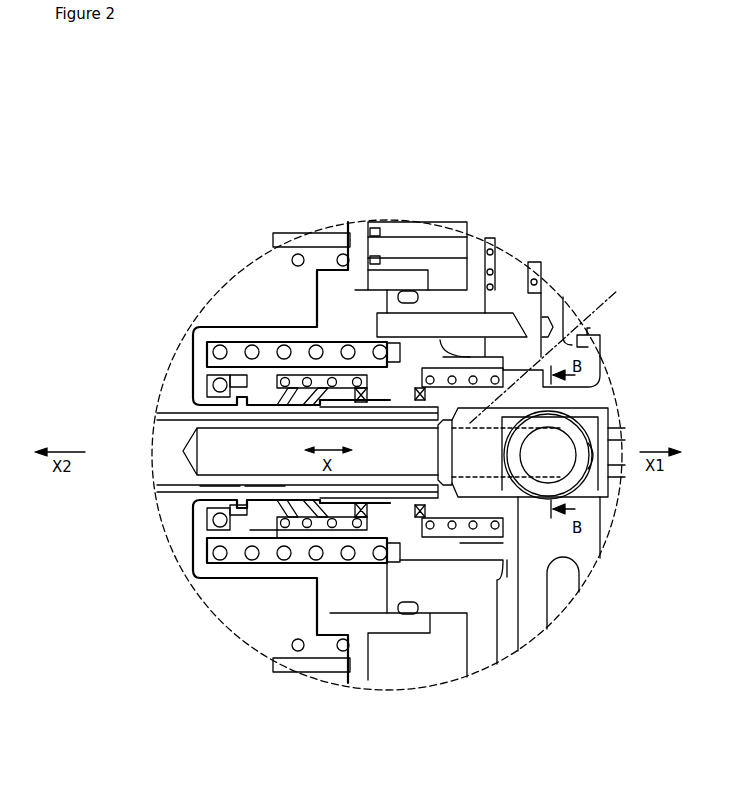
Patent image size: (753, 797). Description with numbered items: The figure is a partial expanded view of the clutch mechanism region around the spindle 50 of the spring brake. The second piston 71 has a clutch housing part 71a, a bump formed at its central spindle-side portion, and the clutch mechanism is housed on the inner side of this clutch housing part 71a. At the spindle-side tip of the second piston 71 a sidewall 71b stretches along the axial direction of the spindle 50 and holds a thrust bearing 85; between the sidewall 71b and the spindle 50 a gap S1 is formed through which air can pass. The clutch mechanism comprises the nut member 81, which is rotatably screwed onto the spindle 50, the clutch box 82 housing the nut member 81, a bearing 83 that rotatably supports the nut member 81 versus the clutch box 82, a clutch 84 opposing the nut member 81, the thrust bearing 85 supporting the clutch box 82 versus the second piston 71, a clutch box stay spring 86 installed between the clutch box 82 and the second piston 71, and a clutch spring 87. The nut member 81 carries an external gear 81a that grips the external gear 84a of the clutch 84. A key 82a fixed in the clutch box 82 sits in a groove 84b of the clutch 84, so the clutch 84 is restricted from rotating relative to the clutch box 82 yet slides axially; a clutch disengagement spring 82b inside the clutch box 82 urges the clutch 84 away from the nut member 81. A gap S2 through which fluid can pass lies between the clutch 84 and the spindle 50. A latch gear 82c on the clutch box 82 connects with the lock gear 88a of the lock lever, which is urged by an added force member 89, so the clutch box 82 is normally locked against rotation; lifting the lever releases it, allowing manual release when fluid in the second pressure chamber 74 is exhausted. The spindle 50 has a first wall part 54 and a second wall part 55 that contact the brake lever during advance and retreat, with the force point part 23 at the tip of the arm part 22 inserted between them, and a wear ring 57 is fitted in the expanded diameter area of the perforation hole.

The arm part 22 is at (590, 568).
The force point part 23 is at (590, 418).
The spindle 50 is at (180, 443).
The first wall part 54 is at (513, 443).
The second wall part 55 is at (605, 480).
The wear ring 57 is at (592, 337).
The second piston 71 is at (342, 240).
The clutch housing part 71a is at (263, 333).
The sidewall 71b is at (175, 417).
The second pressure chamber 74 is at (427, 230).
The nut member 81 is at (312, 395).
The external gear 81a is at (287, 395).
The clutch box 82 is at (342, 397).
The key 82a is at (277, 553).
The clutch disengagement spring 82b is at (300, 560).
The latch gear 82c is at (470, 350).
The bearing 83 is at (357, 500).
The clutch 84 is at (280, 392).
The external gear 84a is at (257, 392).
The groove 84b is at (222, 508).
The thrust bearing 85 is at (207, 522).
The clutch box stay spring 86 is at (303, 525).
The clutch spring 87 is at (465, 545).
The lock gear 88a is at (552, 322).
The added force member 89 is at (537, 283).
The gap S1 is at (263, 490).
The gap S2 is at (220, 490).